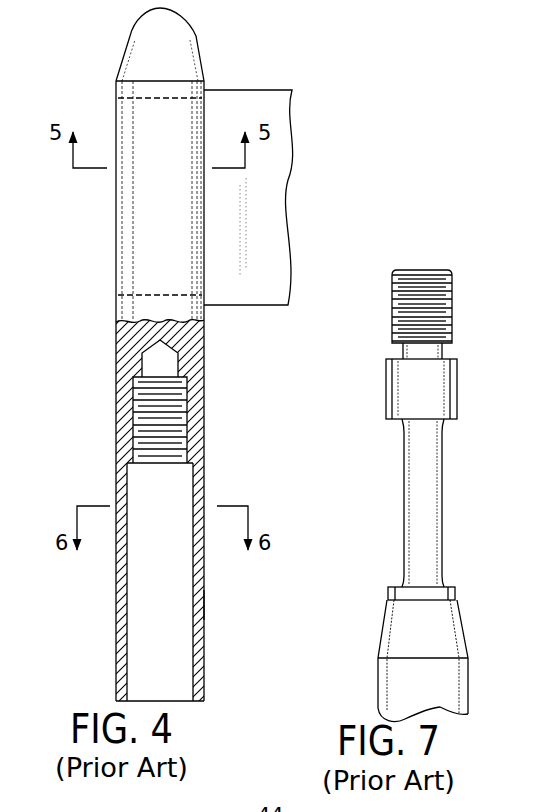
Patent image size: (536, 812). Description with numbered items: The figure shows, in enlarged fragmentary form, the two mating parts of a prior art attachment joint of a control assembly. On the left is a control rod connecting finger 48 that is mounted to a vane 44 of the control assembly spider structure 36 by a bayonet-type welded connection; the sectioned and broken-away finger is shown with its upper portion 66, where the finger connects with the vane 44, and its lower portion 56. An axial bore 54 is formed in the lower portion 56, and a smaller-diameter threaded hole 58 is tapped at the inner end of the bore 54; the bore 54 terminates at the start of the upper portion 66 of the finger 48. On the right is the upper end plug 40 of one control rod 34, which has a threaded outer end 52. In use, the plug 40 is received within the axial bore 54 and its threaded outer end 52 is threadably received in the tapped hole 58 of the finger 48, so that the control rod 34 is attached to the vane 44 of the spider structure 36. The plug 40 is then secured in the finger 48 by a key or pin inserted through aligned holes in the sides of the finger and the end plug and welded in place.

In FIG. 4, the control assembly spider structure 36 is at (294, 71).
In FIG. 4, the vane 44 is at (240, 90).
In FIG. 4, the upper portion 66 is at (116, 248).
In FIG. 4, the control rod connecting finger 48 is at (210, 682).
In FIG. 4, the threaded hole 58 is at (186, 403).
In FIG. 4, the axial bore 54 is at (128, 547).
In FIG. 4, the lower portion 56 is at (205, 607).
In FIG. 7, the threaded outer end 52 is at (392, 301).
In FIG. 7, the upper end plug 40 is at (402, 501).
In FIG. 7, the control rod 34 is at (473, 683).